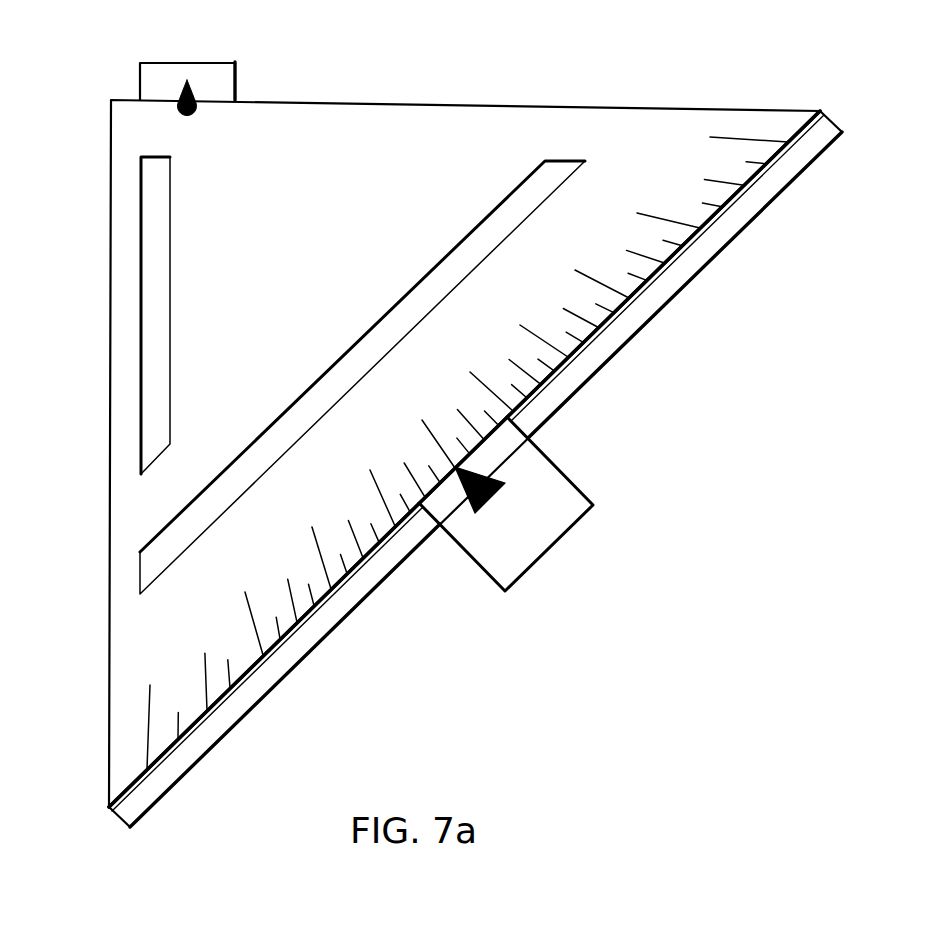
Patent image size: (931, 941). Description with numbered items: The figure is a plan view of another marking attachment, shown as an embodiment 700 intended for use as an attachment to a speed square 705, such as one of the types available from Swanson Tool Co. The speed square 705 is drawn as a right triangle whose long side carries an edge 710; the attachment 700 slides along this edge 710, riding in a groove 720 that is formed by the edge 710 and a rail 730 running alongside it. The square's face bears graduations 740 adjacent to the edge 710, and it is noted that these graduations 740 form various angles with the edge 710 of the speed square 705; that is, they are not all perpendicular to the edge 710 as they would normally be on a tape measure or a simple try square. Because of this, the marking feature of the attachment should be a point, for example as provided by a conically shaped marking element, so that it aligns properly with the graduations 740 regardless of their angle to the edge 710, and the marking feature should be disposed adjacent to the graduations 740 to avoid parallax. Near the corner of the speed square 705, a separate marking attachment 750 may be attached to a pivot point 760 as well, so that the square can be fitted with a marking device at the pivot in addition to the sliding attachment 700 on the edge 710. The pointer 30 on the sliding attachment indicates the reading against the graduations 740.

The marking attachment embodiment 700 is at (428, 540).
The speed square 705 is at (109, 462).
The edge 710 is at (675, 258).
The groove 720 is at (305, 622).
The rail 730 is at (608, 360).
The graduations 740 is at (252, 645).
The separate marking attachment 750 is at (237, 83).
The pivot point 760 is at (190, 97).
The pointer 30 is at (490, 505).